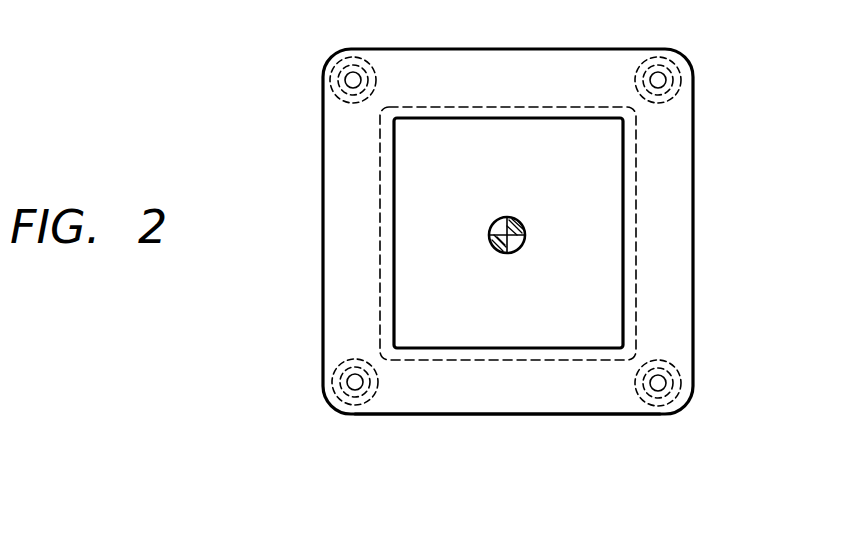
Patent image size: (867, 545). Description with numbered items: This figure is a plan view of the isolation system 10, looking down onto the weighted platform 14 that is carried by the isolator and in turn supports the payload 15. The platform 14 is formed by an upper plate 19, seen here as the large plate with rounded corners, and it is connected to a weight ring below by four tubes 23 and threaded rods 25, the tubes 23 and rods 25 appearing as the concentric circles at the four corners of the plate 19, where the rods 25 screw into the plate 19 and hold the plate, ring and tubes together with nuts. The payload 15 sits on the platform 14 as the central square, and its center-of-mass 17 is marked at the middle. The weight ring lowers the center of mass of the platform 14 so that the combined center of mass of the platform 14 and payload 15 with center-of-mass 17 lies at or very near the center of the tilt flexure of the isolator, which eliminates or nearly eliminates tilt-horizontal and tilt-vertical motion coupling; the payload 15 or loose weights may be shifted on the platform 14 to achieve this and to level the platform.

The isolation system 10 is at (268, 286).
The weighted platform 14 is at (693, 258).
The payload 15 is at (623, 233).
The center-of-mass 17 is at (526, 236).
The upper plate 19 is at (470, 398).
The tubes 23 is at (338, 98).
The threaded rods 25 is at (352, 80).